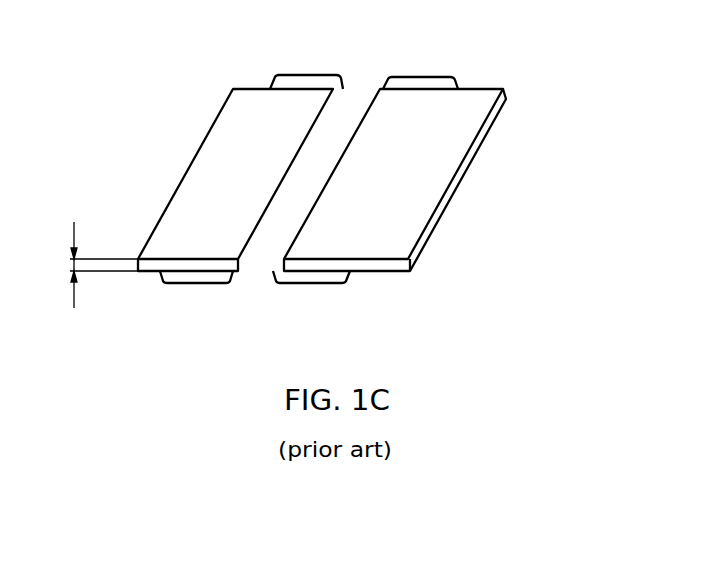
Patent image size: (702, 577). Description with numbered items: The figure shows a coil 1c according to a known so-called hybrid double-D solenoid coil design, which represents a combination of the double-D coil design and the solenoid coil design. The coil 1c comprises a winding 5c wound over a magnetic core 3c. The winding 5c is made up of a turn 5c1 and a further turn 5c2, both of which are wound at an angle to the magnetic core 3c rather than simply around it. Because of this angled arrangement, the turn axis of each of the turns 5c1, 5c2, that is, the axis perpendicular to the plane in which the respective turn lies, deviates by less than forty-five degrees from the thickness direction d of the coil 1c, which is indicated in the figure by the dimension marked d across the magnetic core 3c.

The coil 1c is at (307, 185).
The magnetic core 3c is at (503, 89).
The winding 5c is at (407, 66).
The turn 5c1 is at (310, 284).
The further turn 5c2 is at (195, 284).
The thickness direction d is at (72, 260).